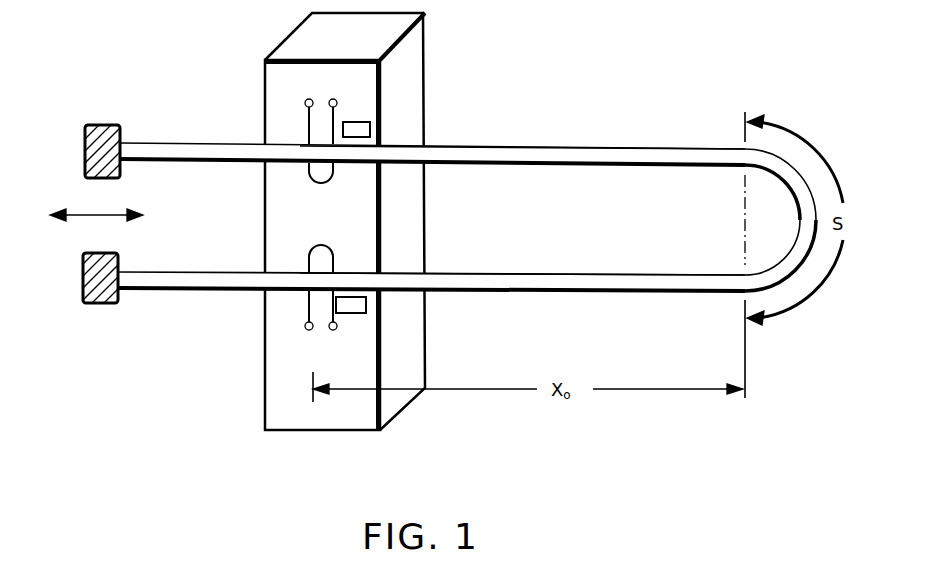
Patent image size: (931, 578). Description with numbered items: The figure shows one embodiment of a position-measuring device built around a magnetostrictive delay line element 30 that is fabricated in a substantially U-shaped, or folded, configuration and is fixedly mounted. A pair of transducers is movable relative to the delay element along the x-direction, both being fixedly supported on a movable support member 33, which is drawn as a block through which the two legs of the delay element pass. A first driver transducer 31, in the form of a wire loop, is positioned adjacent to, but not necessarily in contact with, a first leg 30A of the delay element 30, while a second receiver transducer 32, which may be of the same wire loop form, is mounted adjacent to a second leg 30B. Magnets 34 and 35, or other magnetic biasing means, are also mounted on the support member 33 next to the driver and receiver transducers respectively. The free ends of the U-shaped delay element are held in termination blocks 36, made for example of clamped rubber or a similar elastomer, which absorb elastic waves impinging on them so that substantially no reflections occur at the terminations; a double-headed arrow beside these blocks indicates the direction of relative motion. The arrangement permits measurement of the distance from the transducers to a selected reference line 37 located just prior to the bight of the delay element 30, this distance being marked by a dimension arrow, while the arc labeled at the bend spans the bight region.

The magnetostrictive delay line element 30 is at (566, 144).
The first leg 30A is at (476, 147).
The second leg 30B is at (482, 262).
The driver transducer 31 is at (295, 127).
The receiver transducer 32 is at (295, 305).
The movable support member 33 is at (428, 96).
The magnet 34 is at (358, 123).
The magnet 35 is at (354, 314).
The termination blocks 36 is at (108, 126).
The reference line 37 is at (744, 352).